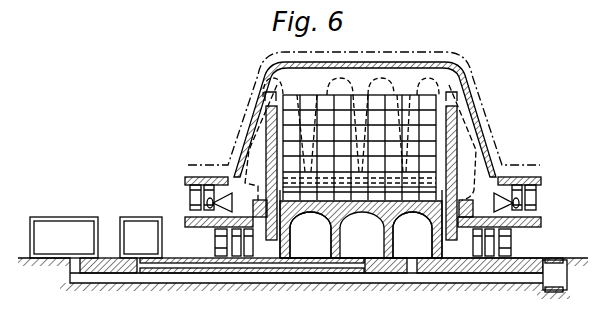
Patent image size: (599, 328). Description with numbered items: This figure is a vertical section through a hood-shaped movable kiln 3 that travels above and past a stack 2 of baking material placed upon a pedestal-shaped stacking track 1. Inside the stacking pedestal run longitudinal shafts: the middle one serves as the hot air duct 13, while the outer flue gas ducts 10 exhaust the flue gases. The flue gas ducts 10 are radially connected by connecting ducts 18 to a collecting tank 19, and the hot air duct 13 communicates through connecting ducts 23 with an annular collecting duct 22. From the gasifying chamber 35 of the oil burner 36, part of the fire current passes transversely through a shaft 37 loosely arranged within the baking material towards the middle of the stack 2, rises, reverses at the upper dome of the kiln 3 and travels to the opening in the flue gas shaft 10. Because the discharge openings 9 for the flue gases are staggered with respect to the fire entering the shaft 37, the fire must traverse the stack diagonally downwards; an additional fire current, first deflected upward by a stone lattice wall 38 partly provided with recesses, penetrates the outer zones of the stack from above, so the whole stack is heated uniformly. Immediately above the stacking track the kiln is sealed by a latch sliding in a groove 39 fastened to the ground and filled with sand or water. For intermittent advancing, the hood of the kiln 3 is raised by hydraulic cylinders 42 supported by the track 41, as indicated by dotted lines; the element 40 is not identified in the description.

The pedestal-shaped stacking track 1 is at (412, 235).
The stack of baking material 2 is at (424, 94).
The hood-shaped movable kiln 3 is at (402, 62).
The discharge openings 9 is at (310, 210).
The flue gas ducts 10 is at (320, 247).
The hot air duct 13 is at (375, 240).
The connecting ducts 18 is at (224, 275).
The collecting tank 19 is at (58, 232).
The annular collecting duct 22 is at (130, 227).
The connecting ducts 23 is at (165, 260).
The gasifying chamber 35 is at (364, 108).
The oil burner 36 is at (344, 194).
The shaft 37 is at (361, 229).
The stone lattice wall 38 is at (347, 126).
The groove 39 is at (255, 260).
The plate 40 is at (277, 250).
The track 41 is at (218, 247).
The hydraulic cylinders 42 is at (192, 203).